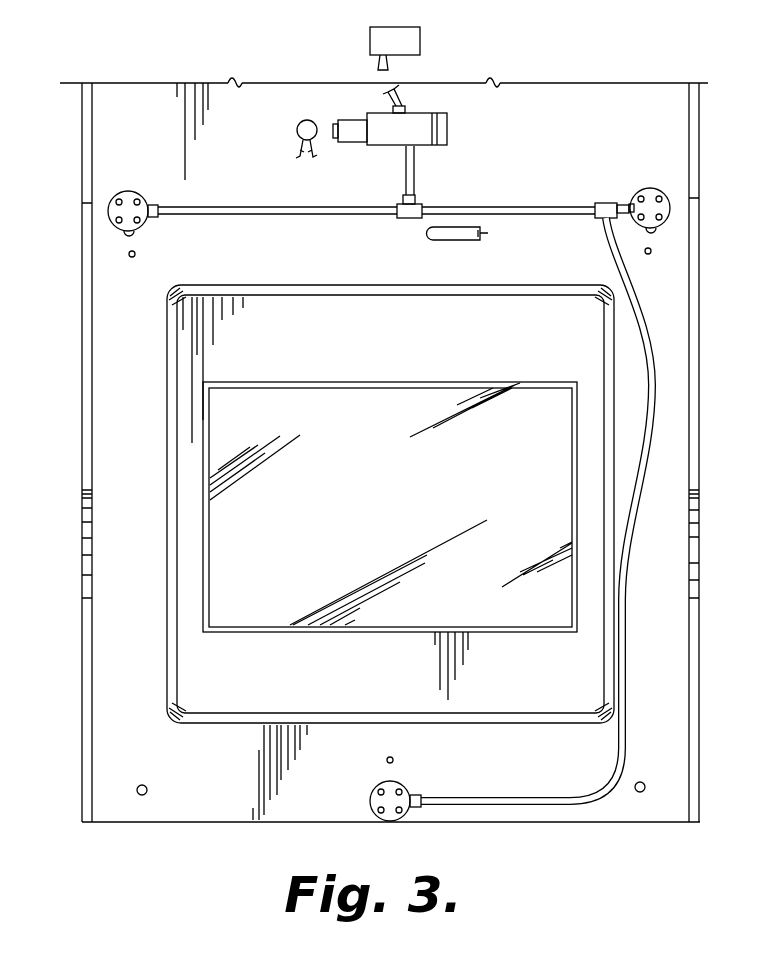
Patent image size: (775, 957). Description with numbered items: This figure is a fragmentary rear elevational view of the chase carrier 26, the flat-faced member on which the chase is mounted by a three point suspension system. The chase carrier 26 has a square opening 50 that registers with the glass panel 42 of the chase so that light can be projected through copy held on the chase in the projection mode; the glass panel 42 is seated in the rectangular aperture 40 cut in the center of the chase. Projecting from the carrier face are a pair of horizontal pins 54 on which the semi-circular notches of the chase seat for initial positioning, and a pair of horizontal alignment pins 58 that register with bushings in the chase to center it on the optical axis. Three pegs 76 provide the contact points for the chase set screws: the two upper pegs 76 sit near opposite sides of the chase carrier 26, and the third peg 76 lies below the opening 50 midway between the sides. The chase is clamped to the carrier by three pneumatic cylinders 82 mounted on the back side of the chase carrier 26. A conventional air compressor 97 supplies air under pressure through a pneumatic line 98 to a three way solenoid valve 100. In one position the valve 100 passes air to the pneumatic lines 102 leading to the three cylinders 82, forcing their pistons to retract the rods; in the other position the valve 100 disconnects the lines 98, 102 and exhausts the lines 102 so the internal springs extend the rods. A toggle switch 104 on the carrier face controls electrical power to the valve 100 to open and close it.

The chase carrier 26 is at (688, 395).
The rectangular aperture 40 is at (408, 620).
The glass panel 42 is at (294, 598).
The square opening 50 is at (326, 700).
The horizontal pins 54 is at (146, 795).
The alignment pins 58 is at (134, 235).
The pegs 76 is at (133, 258).
The pneumatic cylinders 82 is at (130, 192).
The air compressor 97 is at (418, 36).
The pneumatic line 98 is at (402, 93).
The three way solenoid valve 100 is at (448, 125).
The pneumatic lines 102 is at (468, 206).
The toggle switch 104 is at (297, 131).